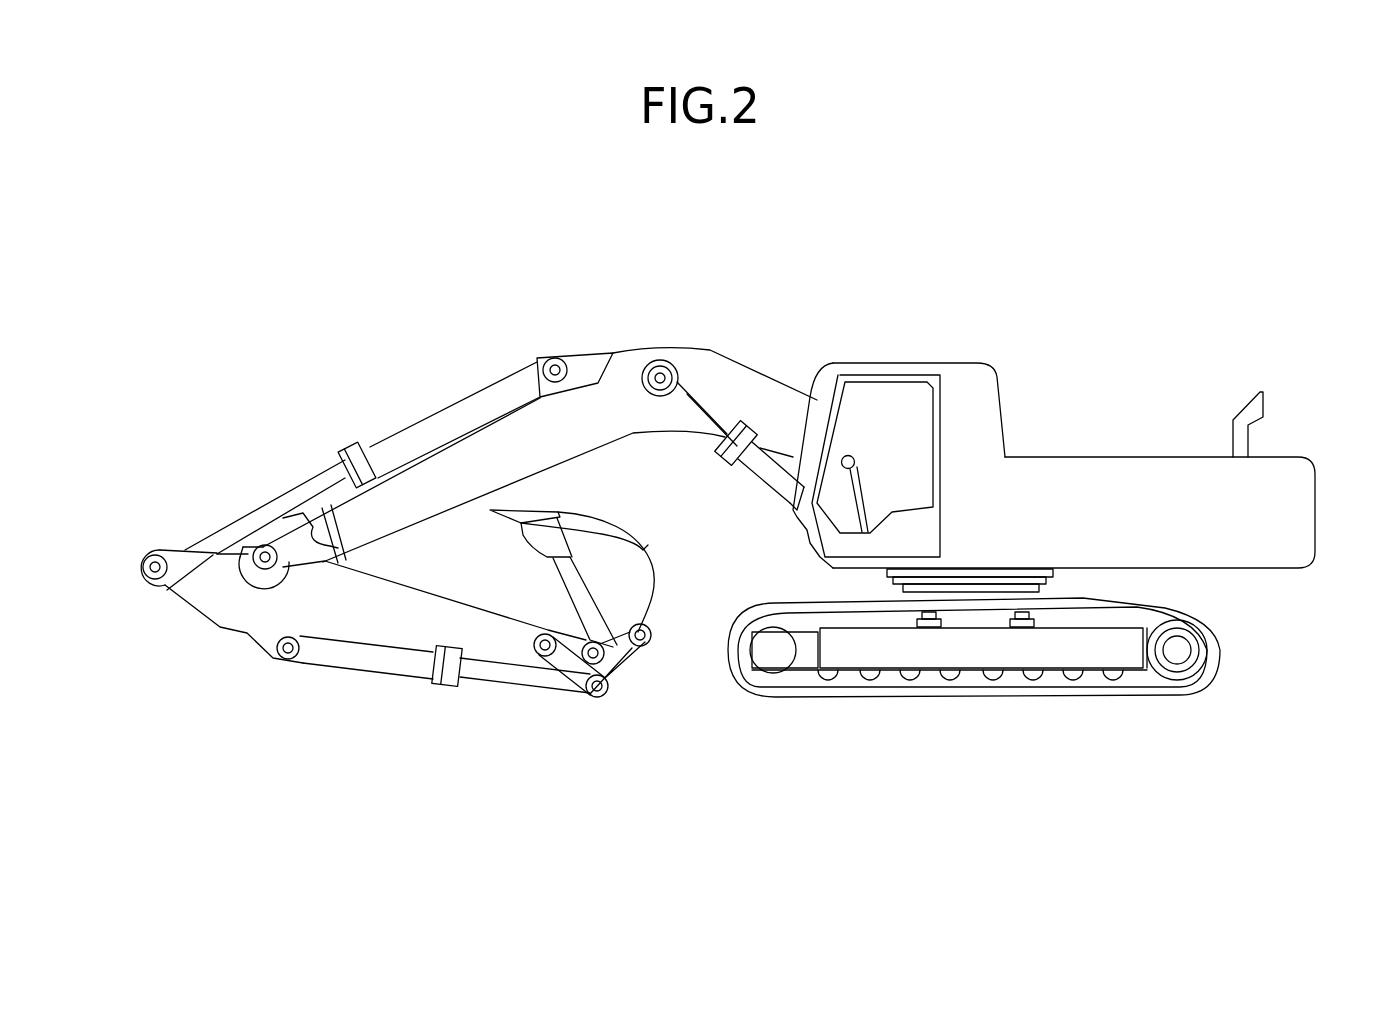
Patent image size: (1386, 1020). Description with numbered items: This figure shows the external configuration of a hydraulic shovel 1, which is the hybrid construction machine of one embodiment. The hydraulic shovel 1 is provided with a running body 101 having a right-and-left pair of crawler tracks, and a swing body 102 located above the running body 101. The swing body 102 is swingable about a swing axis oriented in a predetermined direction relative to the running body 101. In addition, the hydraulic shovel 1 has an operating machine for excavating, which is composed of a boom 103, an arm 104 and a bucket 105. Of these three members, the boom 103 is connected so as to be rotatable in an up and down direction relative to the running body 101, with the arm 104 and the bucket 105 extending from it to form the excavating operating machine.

The hydraulic shovel 1 is at (1091, 248).
The running body 101 is at (1053, 647).
The swing body 102 is at (892, 367).
The boom 103 is at (598, 394).
The arm 104 is at (360, 623).
The bucket 105 is at (640, 580).